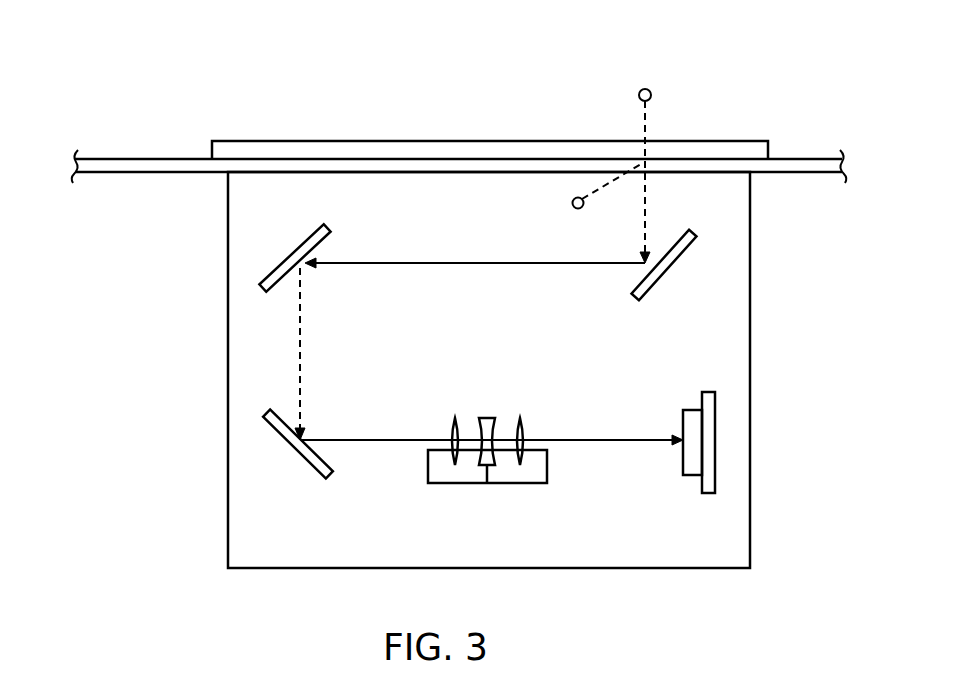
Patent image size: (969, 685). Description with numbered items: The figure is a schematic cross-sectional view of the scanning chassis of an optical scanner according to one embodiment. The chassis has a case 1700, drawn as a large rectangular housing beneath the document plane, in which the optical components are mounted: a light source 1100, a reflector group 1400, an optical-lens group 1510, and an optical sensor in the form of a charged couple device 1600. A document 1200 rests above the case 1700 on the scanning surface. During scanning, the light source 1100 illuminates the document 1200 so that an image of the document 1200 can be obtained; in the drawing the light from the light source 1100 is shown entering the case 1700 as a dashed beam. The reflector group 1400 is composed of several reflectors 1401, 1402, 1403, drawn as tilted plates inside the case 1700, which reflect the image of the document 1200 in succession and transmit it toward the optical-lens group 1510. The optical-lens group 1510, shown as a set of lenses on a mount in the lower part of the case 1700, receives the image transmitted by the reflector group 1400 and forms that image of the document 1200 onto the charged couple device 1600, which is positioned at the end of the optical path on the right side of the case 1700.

The light source 1100 is at (577, 197).
The document 1200 is at (738, 138).
The reflector group 1400 is at (106, 225).
The reflector 1401 is at (633, 292).
The reflector 1402 is at (305, 257).
The reflector 1403 is at (268, 413).
The optical-lens group 1510 is at (488, 483).
The charged couple device 1600 is at (715, 420).
The case 1700 is at (750, 362).